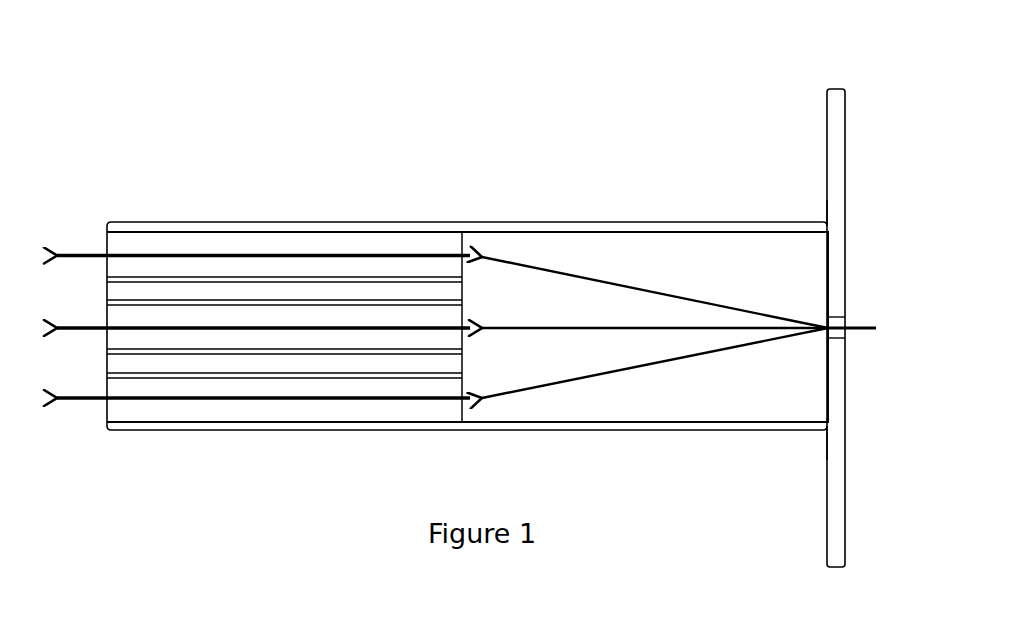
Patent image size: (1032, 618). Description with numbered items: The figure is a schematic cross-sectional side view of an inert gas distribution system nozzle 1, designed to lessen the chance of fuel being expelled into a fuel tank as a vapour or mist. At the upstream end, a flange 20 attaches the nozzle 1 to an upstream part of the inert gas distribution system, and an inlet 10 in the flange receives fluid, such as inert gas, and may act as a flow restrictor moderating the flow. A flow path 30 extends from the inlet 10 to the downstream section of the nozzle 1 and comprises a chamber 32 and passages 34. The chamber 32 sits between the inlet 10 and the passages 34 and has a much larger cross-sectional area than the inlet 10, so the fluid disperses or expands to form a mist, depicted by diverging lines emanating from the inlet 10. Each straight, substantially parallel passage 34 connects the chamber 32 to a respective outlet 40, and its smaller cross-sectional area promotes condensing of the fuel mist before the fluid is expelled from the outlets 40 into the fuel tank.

The nozzle 1 is at (694, 70).
The inlet 10 is at (849, 318).
The flange 20 is at (849, 116).
The flow path 30 is at (542, 315).
The chamber 32 is at (704, 406).
The passage 34 is at (310, 390).
The outlet 40 is at (101, 247).